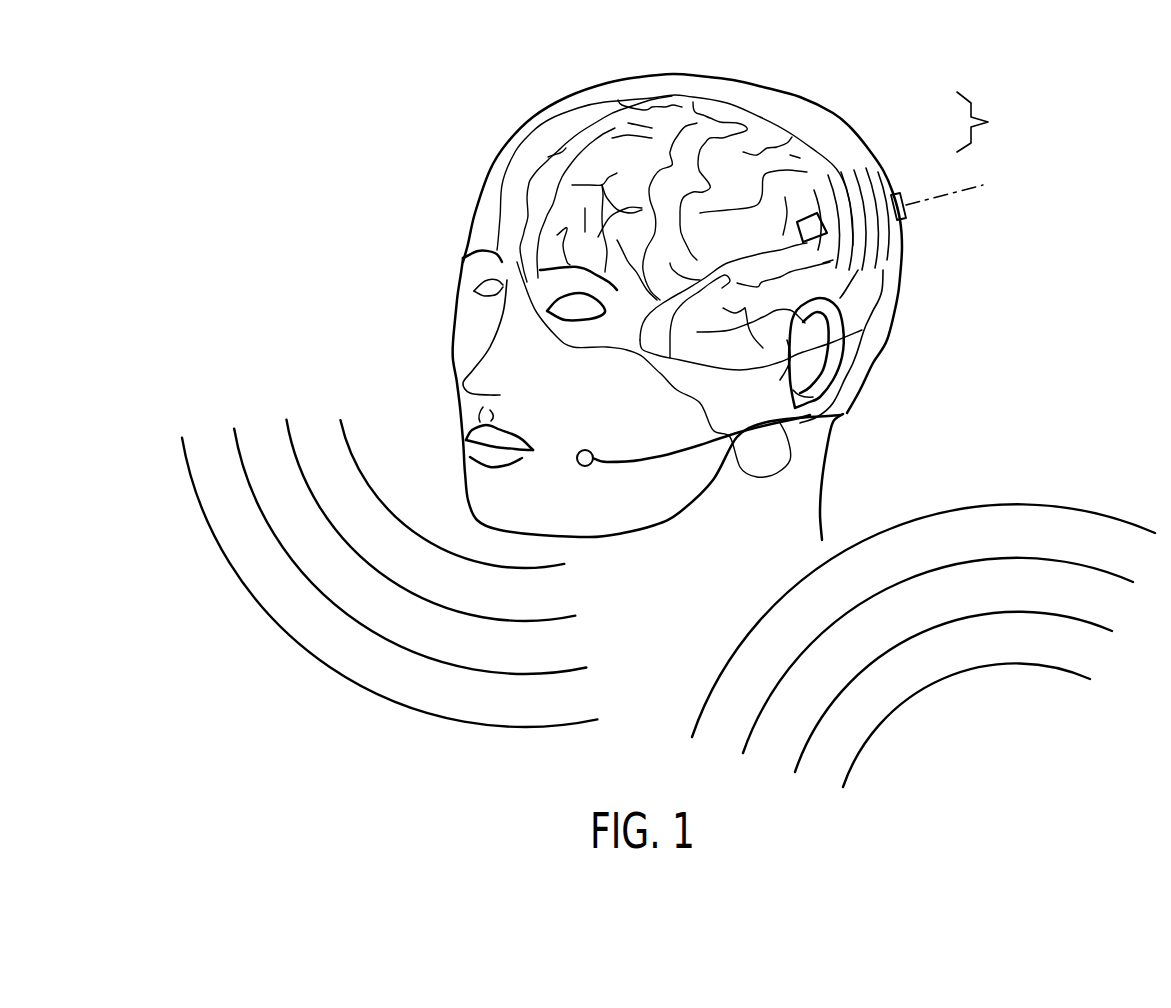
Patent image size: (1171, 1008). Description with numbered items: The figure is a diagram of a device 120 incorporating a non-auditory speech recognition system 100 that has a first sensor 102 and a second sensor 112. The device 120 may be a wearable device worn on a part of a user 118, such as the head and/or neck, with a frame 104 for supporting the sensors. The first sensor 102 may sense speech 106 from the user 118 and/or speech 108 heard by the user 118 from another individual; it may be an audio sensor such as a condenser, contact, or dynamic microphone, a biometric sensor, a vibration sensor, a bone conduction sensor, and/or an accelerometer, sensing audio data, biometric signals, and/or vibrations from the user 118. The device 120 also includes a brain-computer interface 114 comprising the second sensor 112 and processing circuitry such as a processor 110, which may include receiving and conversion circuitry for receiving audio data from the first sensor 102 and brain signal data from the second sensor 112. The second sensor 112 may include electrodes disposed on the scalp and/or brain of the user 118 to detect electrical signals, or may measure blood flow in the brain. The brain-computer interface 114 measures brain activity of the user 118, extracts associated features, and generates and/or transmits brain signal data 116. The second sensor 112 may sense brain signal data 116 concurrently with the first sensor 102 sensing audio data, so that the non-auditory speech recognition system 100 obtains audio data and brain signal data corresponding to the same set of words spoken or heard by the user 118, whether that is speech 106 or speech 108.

The non-auditory speech recognition system 100 is at (414, 110).
The first sensor 102 is at (585, 467).
The frame 104 is at (655, 462).
The speech 106 is at (310, 657).
The speech 108 is at (923, 690).
The processor 110 is at (905, 197).
The second sensor 112 is at (812, 210).
The brain-computer interface 114 is at (992, 122).
The brain signal data 116 is at (888, 250).
The user 118 is at (475, 205).
The device 120 is at (665, 605).